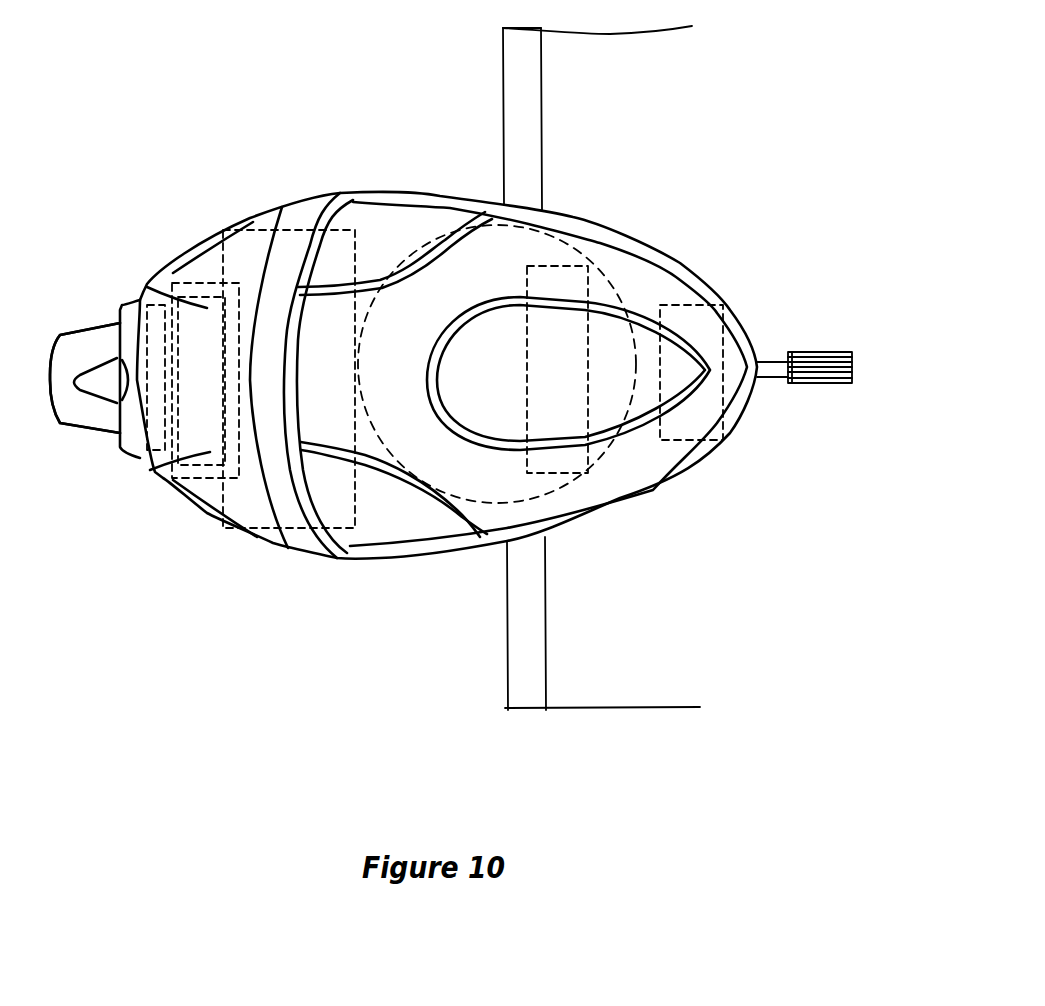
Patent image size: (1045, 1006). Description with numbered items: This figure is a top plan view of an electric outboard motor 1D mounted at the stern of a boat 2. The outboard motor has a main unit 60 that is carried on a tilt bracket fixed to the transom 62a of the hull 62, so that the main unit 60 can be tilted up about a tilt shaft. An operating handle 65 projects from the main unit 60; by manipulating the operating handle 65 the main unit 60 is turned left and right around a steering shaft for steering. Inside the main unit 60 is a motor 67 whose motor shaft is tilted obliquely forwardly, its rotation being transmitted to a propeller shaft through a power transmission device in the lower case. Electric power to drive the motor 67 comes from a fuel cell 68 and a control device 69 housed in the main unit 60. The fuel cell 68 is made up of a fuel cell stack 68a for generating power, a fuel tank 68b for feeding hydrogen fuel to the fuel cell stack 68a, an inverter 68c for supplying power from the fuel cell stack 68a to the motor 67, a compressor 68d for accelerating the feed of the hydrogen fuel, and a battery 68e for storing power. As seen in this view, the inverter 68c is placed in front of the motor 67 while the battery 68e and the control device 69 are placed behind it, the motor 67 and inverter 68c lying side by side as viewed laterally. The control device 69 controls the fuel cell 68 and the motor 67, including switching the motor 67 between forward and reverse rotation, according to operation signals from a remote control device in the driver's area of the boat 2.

The electric outboard motor 1D is at (470, 48).
The boat 2 is at (623, 180).
The main unit 60 is at (133, 279).
The hull 62 is at (692, 714).
The transom 62a is at (541, 623).
The operating handle 65 is at (773, 378).
The motor 67 is at (440, 228).
The fuel cell 68 is at (122, 460).
The fuel cell stack 68a is at (338, 508).
The fuel tank 68b is at (562, 462).
The inverter 68c is at (697, 323).
The compressor 68d is at (160, 487).
The battery 68e is at (183, 473).
The control device 69 is at (197, 308).